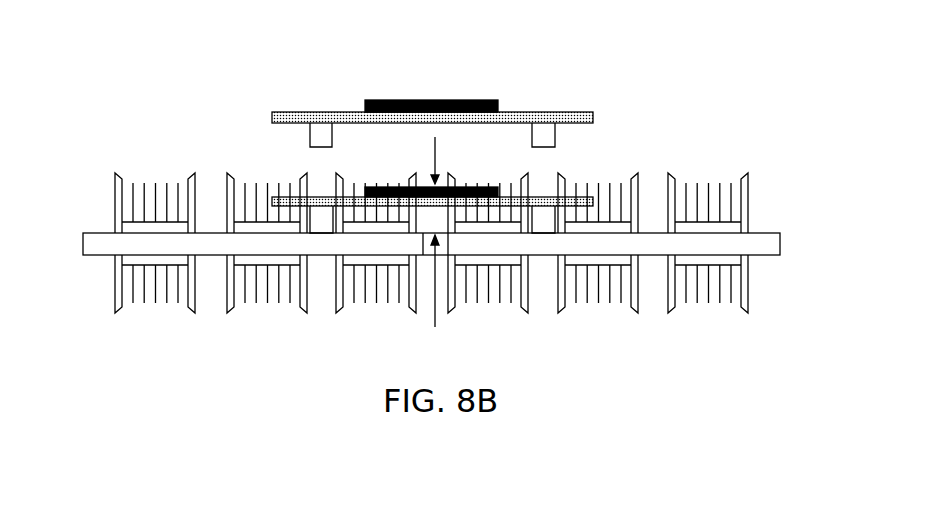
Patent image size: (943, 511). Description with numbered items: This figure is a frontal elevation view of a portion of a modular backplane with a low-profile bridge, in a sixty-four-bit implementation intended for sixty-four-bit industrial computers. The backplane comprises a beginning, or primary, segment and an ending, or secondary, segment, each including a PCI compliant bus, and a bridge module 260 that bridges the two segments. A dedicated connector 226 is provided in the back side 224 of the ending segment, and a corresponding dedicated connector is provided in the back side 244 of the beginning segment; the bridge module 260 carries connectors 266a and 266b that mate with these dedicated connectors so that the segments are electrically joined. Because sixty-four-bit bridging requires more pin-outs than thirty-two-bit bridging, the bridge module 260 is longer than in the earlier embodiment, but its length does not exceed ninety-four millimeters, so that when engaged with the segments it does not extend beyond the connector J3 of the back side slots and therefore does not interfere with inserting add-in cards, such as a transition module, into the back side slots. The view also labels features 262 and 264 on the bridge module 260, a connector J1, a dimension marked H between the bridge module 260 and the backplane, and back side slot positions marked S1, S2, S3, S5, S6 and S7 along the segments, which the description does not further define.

The back side 224 is at (757, 233).
The dedicated connector 226 is at (538, 224).
The back side 244 is at (110, 233).
The bridge module 260 is at (424, 96).
The substrate 262 is at (340, 111).
The bonding layer 264 is at (467, 101).
The connector 266a is at (323, 137).
The connector 266b is at (538, 138).
The connector J3 is at (715, 190).
The lower joint J1 is at (748, 300).
The height H is at (435, 246).
The section S1 is at (376, 260).
The section S2 is at (267, 260).
The section S3 is at (155, 260).
The section S5 is at (736, 248).
The section S6 is at (598, 260).
The section S7 is at (488, 260).